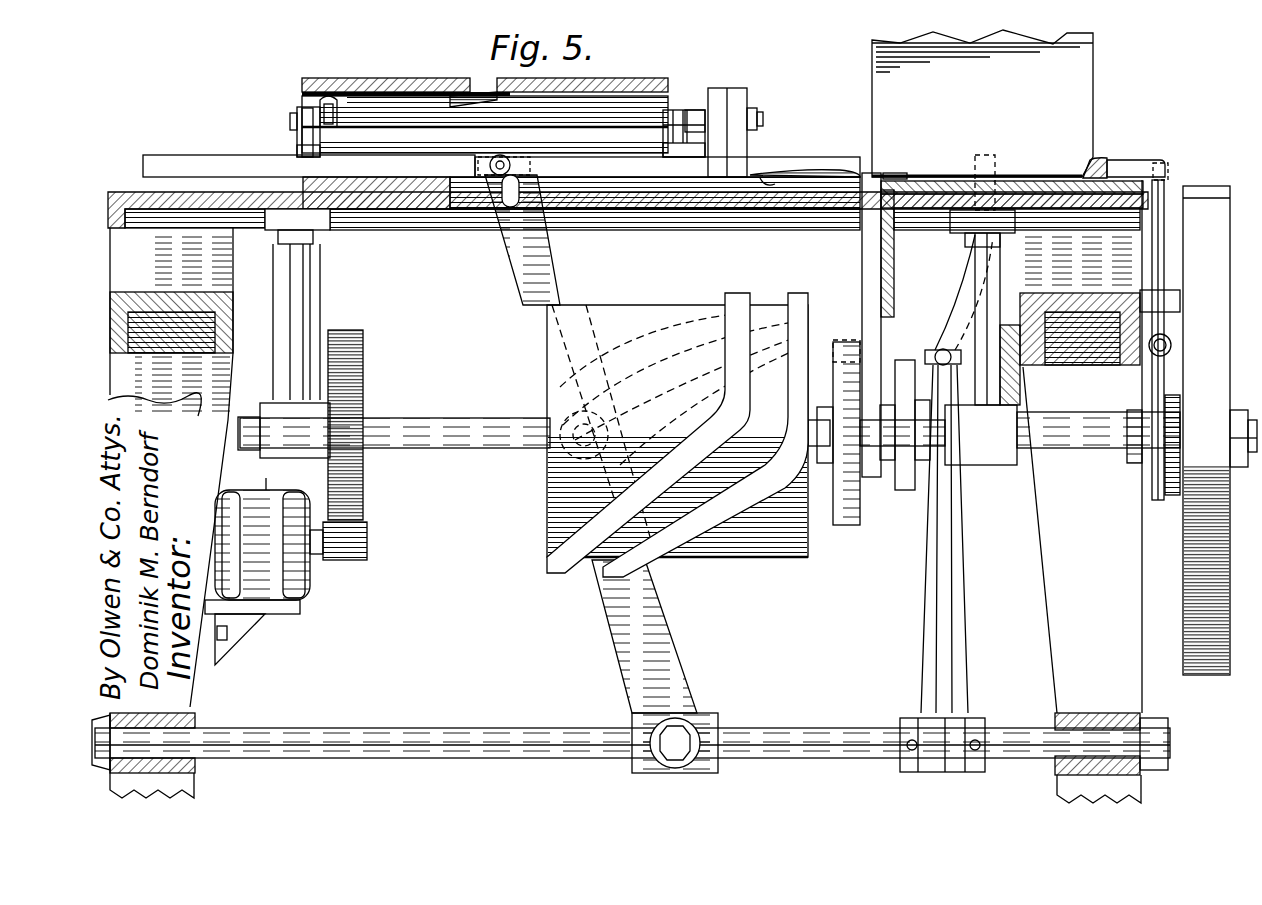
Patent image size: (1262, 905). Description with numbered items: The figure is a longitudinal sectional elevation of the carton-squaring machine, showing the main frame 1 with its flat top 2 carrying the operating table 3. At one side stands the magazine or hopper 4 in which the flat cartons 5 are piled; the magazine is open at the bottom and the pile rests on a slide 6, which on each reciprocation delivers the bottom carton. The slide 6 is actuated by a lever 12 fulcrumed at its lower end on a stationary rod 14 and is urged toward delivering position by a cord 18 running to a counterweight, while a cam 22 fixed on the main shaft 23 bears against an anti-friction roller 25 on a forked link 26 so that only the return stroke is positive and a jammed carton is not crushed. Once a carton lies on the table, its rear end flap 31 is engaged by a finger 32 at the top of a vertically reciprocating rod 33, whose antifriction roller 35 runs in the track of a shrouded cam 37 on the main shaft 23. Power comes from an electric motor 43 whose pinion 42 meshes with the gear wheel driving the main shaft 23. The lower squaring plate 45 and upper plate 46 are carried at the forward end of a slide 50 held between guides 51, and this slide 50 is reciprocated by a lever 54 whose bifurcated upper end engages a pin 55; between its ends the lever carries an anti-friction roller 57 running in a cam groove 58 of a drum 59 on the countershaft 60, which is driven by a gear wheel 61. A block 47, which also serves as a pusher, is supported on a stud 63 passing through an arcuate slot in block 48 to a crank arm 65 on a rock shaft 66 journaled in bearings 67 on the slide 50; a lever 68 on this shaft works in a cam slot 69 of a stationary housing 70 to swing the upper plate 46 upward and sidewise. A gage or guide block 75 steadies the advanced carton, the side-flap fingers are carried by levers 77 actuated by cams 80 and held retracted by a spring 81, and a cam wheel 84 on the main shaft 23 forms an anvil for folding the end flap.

The main frame 1 is at (118, 365).
The flat top 2 is at (118, 192).
The operating table 3 is at (1120, 165).
The magazine or hopper 4 is at (1085, 82).
The flat cartons 5 is at (1005, 183).
The slide 6 is at (950, 192).
The lever 12 is at (950, 320).
The stationary rod 14 is at (820, 728).
The cord 18 is at (930, 352).
The cam 22 is at (895, 490).
The main shaft 23 is at (1085, 448).
The anti-friction roller 25 is at (900, 470).
The forked link 26 is at (920, 460).
The rear end flap 31 is at (898, 173).
The finger 32 is at (865, 200).
The vertically reciprocating rod 33 is at (880, 250).
The antifriction roller 35 is at (840, 340).
The shrouded cam 37 is at (845, 525).
The pinion 42 is at (355, 548).
The electric motor 43 is at (295, 598).
The lower squaring plate 45 is at (767, 178).
The upper plate 46 is at (795, 171).
The block 47 is at (740, 92).
The block 48 is at (716, 88).
The slide 50 is at (240, 155).
The guides 51 is at (400, 210).
The lever 54 is at (530, 300).
The pin 55 is at (520, 165).
The anti-friction roller 57 is at (560, 448).
The cam groove 58 is at (760, 300).
The drum 59 is at (770, 545).
The countershaft 60 is at (455, 418).
The gear wheel 61 is at (360, 345).
The stud 63 is at (763, 118).
The crank arm 65 is at (693, 110).
The rock shaft 66 is at (605, 125).
The bearings 67 is at (295, 115).
The lever 68 is at (370, 78).
The cam slot 69 is at (478, 92).
The stationary housing 70 is at (303, 78).
The gage or guide block 75 is at (1100, 160).
The levers 77 is at (1168, 375).
The cams 80 is at (1172, 495).
The spring 81 is at (1172, 345).
The cam wheel 84 is at (1183, 600).